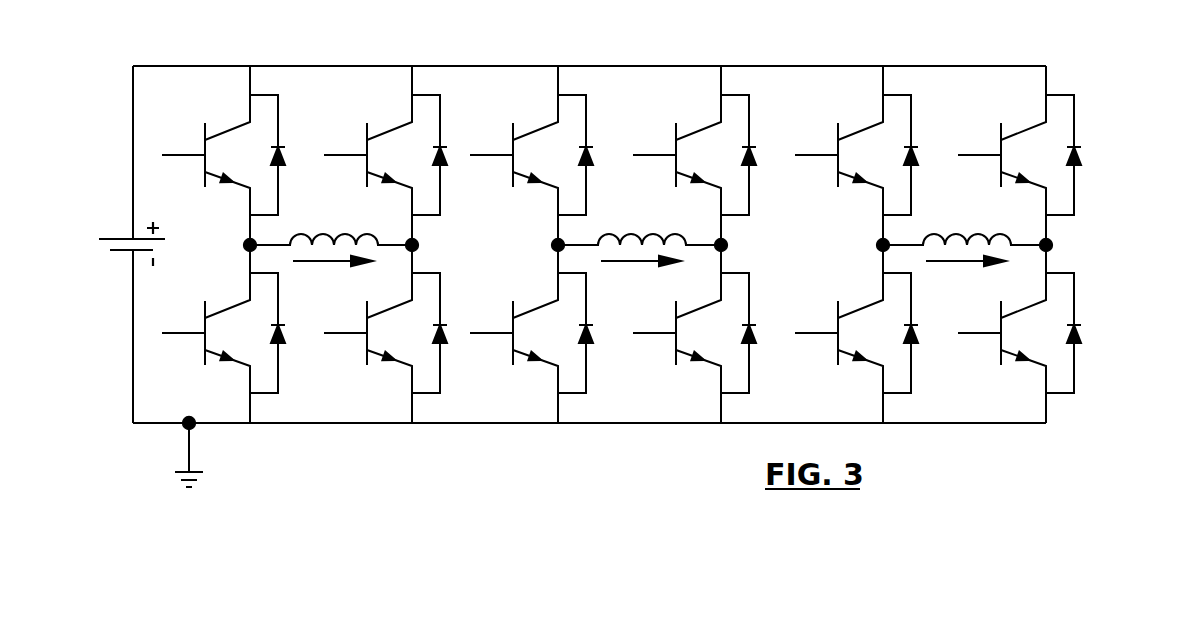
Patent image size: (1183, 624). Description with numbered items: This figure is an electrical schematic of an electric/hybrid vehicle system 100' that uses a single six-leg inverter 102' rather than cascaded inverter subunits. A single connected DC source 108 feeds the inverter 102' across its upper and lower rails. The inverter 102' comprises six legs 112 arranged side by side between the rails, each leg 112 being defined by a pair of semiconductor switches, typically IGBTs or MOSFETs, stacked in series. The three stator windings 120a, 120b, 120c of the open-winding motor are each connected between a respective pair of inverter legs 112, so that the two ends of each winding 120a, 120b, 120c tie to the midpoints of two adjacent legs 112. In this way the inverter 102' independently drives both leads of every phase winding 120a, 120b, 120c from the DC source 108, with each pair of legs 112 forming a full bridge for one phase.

The EV/HEV system 100' is at (606, 250).
The six-leg inverter 102' is at (609, 250).
The DC source 108 is at (119, 237).
The inverter leg 112 is at (188, 210).
The stator winding 120a is at (305, 233).
The stator winding 120b is at (613, 233).
The stator winding 120c is at (937, 233).